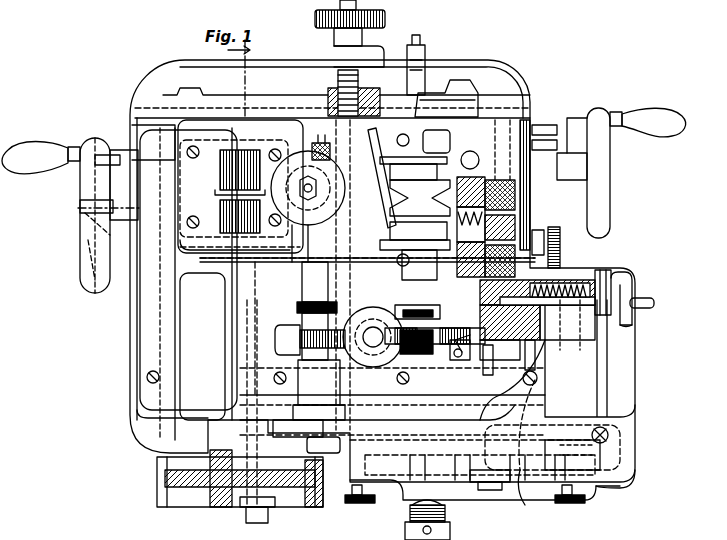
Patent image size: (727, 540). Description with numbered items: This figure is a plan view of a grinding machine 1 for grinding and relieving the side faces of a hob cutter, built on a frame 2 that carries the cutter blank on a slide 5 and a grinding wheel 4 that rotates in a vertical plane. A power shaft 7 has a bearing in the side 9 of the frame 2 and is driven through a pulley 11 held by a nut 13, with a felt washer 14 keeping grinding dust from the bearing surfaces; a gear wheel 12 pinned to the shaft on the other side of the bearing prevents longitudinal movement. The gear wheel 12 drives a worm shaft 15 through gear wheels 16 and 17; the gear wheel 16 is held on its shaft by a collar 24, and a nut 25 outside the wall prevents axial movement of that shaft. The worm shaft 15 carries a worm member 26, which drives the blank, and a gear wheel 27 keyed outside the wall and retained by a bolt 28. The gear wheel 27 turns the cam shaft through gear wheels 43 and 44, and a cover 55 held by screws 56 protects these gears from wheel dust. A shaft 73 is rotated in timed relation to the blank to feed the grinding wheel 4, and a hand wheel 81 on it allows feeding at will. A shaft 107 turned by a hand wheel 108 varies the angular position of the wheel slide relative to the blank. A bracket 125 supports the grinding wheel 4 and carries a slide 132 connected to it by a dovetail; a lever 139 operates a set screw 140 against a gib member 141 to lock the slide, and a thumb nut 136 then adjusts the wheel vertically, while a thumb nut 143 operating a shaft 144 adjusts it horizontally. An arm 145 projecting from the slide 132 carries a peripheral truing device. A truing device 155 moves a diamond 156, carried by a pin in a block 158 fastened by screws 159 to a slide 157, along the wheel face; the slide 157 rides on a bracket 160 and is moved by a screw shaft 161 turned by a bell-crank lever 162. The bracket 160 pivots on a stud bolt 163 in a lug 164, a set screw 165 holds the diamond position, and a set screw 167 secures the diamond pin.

The grinding machine 1 is at (549, 83).
The frame 2 is at (497, 66).
The grinding wheel 4 is at (445, 340).
The slide 5 is at (232, 79).
The power shaft 7 is at (252, 318).
The side of the frame 9 is at (190, 405).
The pulley 11 is at (157, 483).
The gear wheel 12 is at (214, 363).
The nut 13 is at (258, 510).
The felt washer 14 is at (275, 468).
The worm shaft 15 is at (440, 495).
The gear wheel 16 is at (341, 347).
The gear wheel 17 is at (512, 380).
The collar 24 is at (275, 342).
The nut 25 is at (336, 453).
The worm member 26 is at (445, 318).
The gear wheel 27 is at (383, 475).
The bolt 28 is at (470, 490).
The gear wheel 43 is at (522, 500).
The gear wheel 44 is at (605, 460).
The cover 55 is at (637, 480).
The screws 56 is at (352, 505).
The shaft 73 is at (242, 150).
The hand wheel 81 is at (602, 108).
The shaft 107 is at (200, 253).
The hand wheel 108 is at (82, 277).
The bracket 125 is at (185, 118).
The slide 132 is at (336, 82).
The thumb nut 136 is at (220, 195).
The lever 139 is at (372, 165).
The set screw 140 is at (305, 148).
The gib member 141 is at (320, 140).
The thumb nut 143 is at (385, 19).
The shaft 144 is at (340, 82).
The arm 145 is at (302, 279).
The truing device 155 is at (578, 343).
The diamond 156 is at (465, 360).
The slide 157 is at (597, 332).
The block 158 is at (520, 350).
The screws 159 is at (537, 372).
The bracket 160 is at (566, 262).
The screw shaft 161 is at (595, 272).
The bell-crank lever 162 is at (632, 305).
The stud bolt 163 is at (540, 208).
The lug 164 is at (530, 116).
The set screw 165 is at (560, 232).
The set screw 167 is at (478, 350).